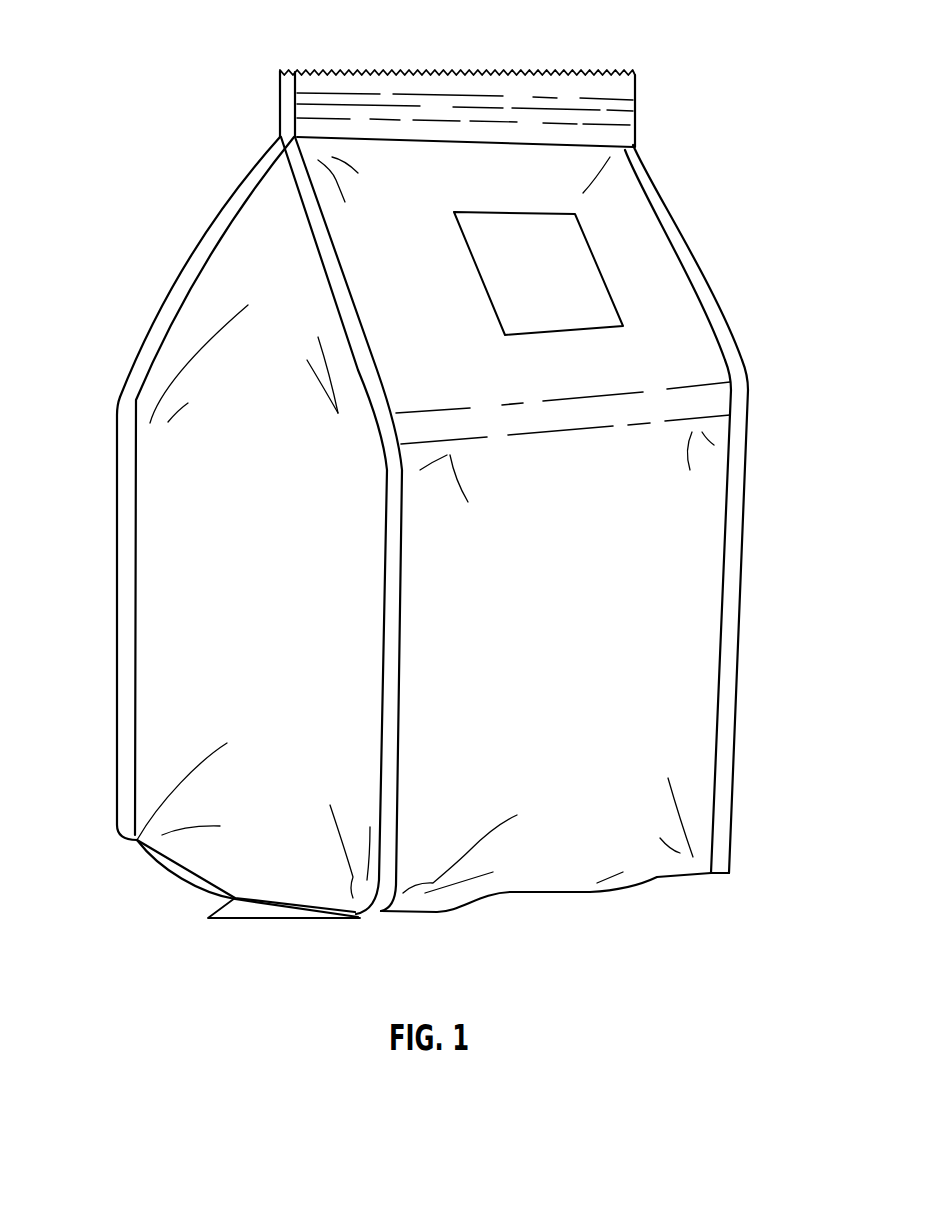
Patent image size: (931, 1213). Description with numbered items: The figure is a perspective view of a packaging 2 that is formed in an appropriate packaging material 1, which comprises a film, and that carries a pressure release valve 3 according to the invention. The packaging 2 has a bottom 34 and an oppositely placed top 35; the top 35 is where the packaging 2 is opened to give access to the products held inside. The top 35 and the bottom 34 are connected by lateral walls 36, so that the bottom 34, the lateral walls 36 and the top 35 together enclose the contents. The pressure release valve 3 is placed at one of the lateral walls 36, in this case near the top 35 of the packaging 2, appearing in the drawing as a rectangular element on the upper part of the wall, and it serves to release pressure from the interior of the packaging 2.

The packaging material 1 is at (328, 173).
The packaging 2 is at (134, 124).
The pressure release valve 3 is at (565, 262).
The bottom 34 is at (543, 868).
The top 35 is at (480, 165).
The lateral walls 36 is at (478, 752).